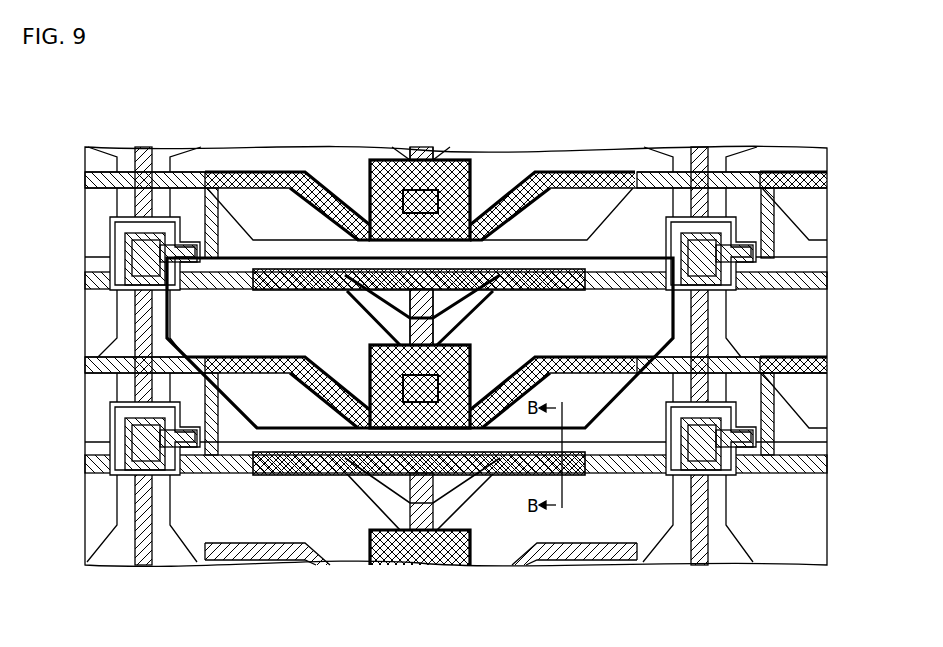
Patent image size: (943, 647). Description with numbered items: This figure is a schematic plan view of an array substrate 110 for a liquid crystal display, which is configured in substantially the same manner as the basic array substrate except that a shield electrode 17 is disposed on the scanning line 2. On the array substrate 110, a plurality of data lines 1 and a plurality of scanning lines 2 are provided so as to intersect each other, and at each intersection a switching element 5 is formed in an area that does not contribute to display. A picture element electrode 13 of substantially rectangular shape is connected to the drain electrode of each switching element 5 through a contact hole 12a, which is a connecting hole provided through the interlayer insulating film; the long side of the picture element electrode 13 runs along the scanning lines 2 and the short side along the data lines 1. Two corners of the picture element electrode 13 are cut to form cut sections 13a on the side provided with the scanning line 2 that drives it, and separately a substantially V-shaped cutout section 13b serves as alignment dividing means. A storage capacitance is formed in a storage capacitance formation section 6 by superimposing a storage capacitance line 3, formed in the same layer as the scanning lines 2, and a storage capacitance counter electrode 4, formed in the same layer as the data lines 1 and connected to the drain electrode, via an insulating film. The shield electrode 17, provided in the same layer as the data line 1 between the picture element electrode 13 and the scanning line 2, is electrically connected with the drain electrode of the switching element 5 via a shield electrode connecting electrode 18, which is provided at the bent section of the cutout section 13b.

The array substrate 110 is at (766, 112).
The data line 1 is at (147, 566).
The scanning line 2 is at (240, 248).
The storage capacitance line 3 is at (97, 368).
The storage capacitance counter electrode 4 is at (233, 355).
The switching element 5 is at (104, 239).
The storage capacitance formation section 6 is at (419, 436).
The contact hole 12a is at (470, 357).
The picture element electrode 13 is at (607, 255).
The cut section 13a is at (632, 375).
The cutout section 13b is at (453, 303).
The shield electrode 17 is at (528, 300).
The shield electrode connecting electrode 18 is at (417, 303).